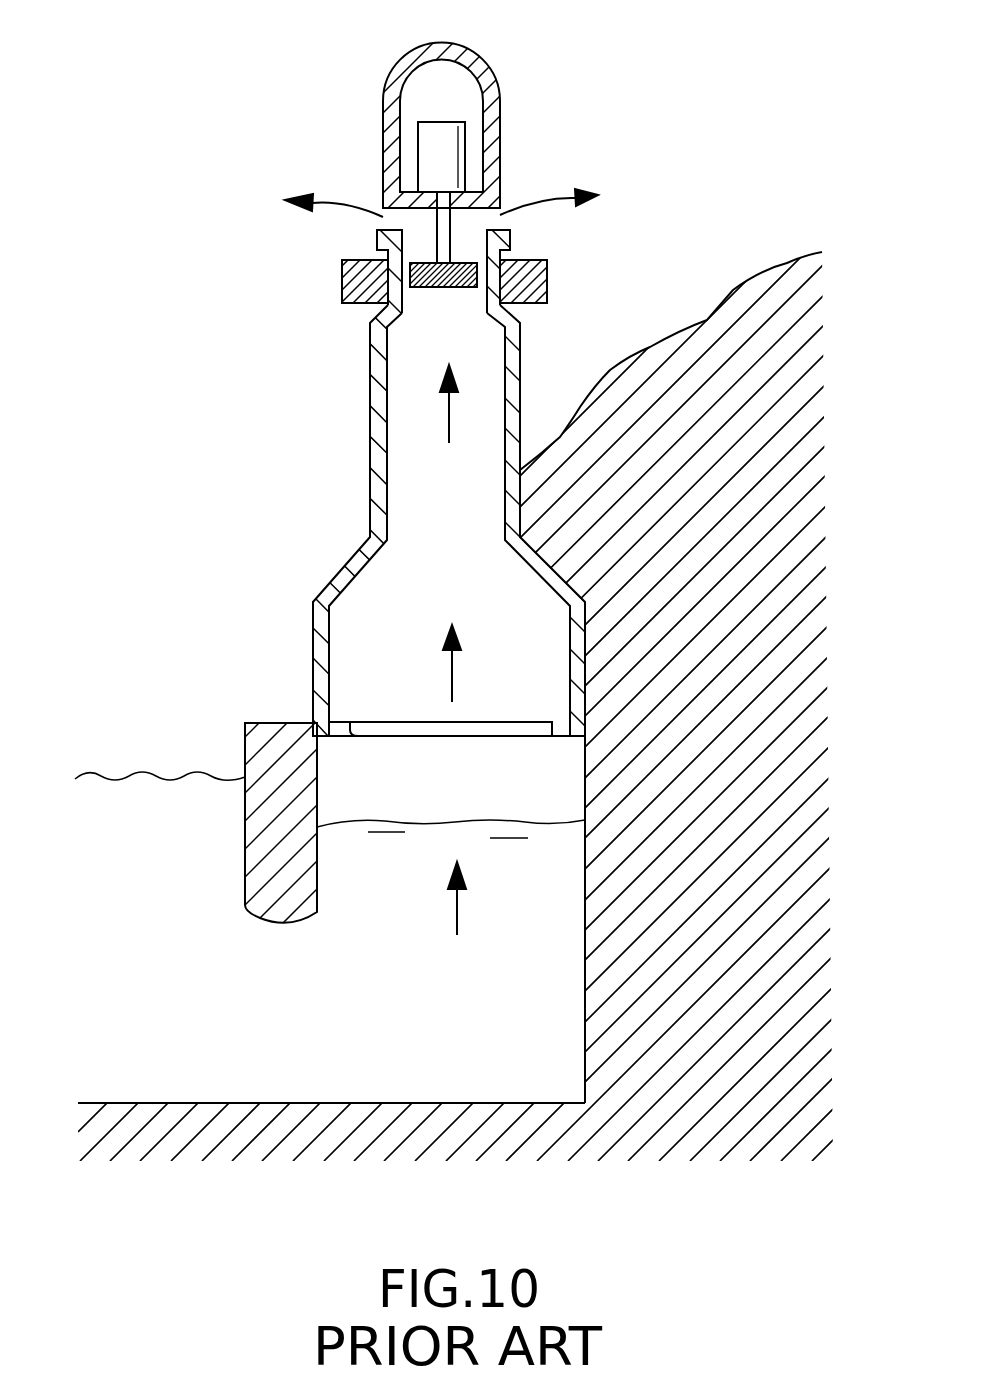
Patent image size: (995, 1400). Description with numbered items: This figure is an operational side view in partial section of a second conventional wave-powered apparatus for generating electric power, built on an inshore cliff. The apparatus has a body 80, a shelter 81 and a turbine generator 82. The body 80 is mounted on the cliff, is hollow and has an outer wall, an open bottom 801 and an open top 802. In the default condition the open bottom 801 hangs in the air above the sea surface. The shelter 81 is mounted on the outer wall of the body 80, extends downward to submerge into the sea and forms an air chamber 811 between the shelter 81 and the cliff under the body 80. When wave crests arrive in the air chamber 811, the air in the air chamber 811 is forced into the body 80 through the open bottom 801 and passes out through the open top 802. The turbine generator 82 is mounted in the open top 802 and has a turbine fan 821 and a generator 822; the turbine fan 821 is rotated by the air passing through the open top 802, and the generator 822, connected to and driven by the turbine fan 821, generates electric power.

The body 80 is at (317, 410).
The open bottom 801 is at (366, 738).
The open top 802 is at (412, 236).
The shelter 81 is at (245, 757).
The air chamber 811 is at (343, 784).
The turbine generator 82 is at (464, 88).
The turbine fan 821 is at (450, 288).
The generator 822 is at (432, 128).